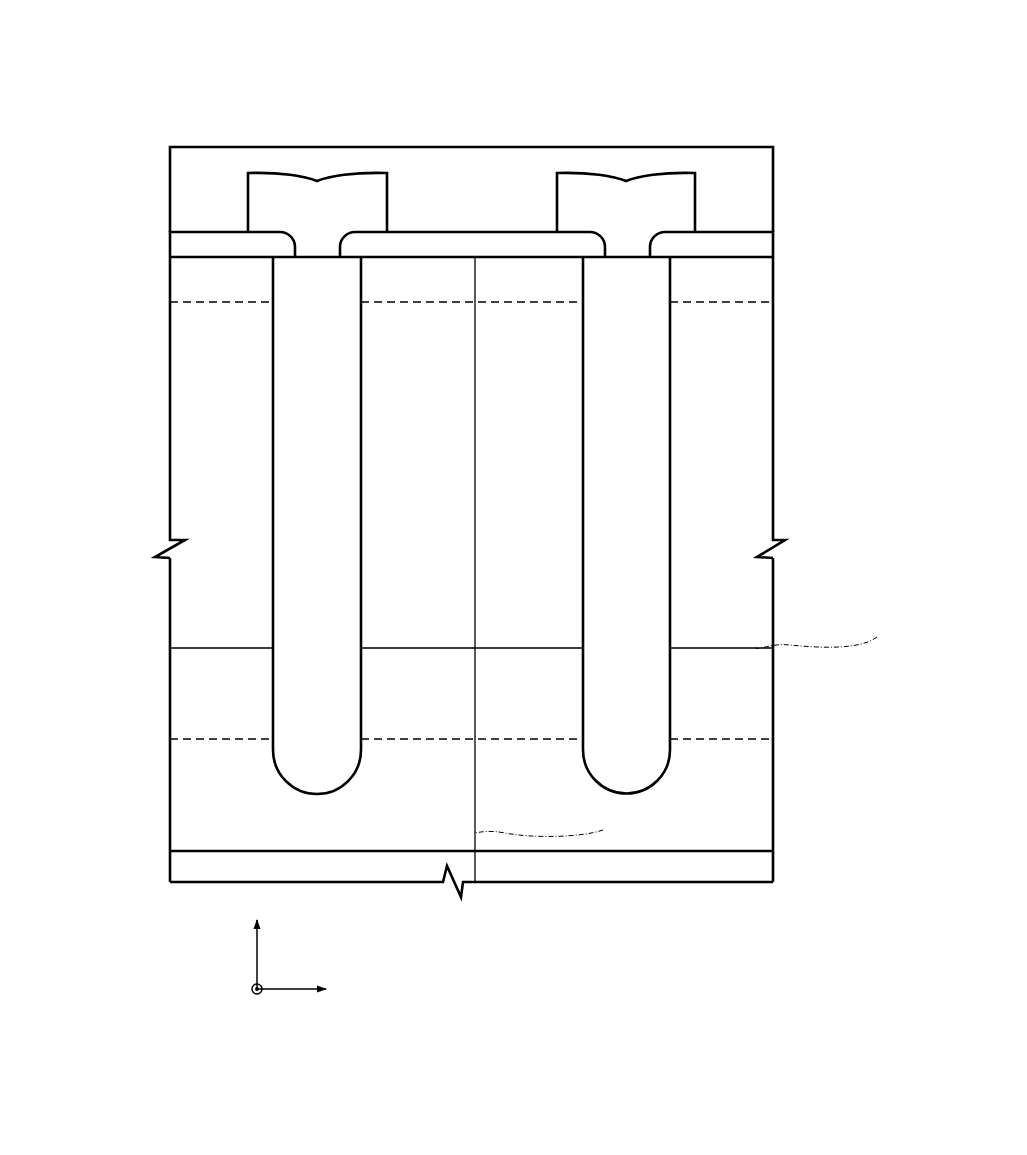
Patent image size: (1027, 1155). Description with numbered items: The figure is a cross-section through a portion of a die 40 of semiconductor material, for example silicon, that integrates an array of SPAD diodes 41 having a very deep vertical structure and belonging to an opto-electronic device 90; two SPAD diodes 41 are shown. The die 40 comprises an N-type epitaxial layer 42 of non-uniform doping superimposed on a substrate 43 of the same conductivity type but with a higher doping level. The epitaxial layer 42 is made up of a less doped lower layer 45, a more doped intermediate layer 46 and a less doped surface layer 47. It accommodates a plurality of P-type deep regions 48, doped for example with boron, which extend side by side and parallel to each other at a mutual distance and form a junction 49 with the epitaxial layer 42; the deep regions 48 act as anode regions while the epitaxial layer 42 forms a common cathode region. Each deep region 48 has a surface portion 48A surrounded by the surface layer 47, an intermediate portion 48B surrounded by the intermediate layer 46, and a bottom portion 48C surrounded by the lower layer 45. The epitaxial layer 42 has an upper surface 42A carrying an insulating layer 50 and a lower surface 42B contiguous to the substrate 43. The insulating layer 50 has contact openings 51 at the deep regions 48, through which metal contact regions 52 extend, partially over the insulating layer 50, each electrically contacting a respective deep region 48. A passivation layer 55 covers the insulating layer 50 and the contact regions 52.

The opto-electronic device 90 is at (118, 147).
The passivation layer 55 is at (762, 167).
The contact regions 52 is at (330, 197).
The insulating layer 50 is at (762, 240).
The contact openings 51 is at (323, 247).
The surface layer 47 is at (762, 278).
The upper surface 42A is at (183, 250).
The lower surface 42B is at (177, 856).
The SPAD diodes 41 is at (190, 531).
The epitaxial layer 42 is at (773, 612).
The substrate 43 is at (765, 865).
The lower layer 45 is at (757, 803).
The intermediate layer 46 is at (762, 700).
The die 40 is at (775, 408).
The deep regions 48 is at (471, 525).
The surface portion 48A is at (622, 280).
The intermediate portion 48B is at (345, 602).
The bottom portion 48C is at (323, 767).
The junction 49 is at (363, 473).